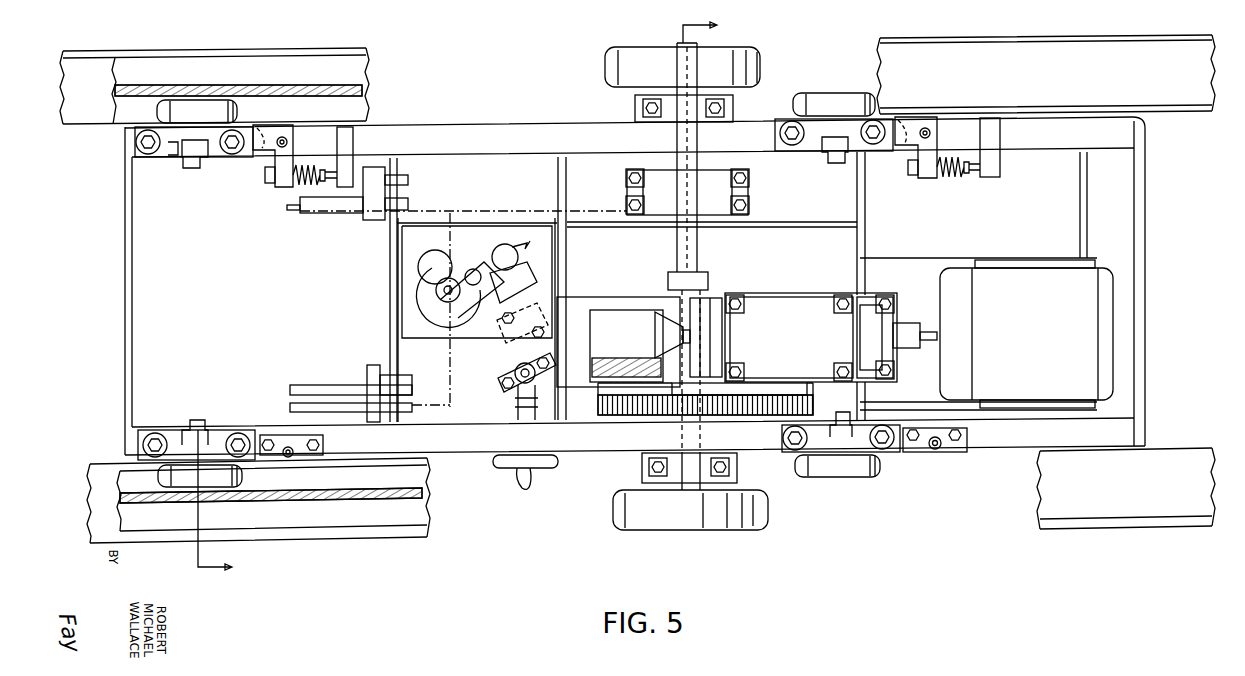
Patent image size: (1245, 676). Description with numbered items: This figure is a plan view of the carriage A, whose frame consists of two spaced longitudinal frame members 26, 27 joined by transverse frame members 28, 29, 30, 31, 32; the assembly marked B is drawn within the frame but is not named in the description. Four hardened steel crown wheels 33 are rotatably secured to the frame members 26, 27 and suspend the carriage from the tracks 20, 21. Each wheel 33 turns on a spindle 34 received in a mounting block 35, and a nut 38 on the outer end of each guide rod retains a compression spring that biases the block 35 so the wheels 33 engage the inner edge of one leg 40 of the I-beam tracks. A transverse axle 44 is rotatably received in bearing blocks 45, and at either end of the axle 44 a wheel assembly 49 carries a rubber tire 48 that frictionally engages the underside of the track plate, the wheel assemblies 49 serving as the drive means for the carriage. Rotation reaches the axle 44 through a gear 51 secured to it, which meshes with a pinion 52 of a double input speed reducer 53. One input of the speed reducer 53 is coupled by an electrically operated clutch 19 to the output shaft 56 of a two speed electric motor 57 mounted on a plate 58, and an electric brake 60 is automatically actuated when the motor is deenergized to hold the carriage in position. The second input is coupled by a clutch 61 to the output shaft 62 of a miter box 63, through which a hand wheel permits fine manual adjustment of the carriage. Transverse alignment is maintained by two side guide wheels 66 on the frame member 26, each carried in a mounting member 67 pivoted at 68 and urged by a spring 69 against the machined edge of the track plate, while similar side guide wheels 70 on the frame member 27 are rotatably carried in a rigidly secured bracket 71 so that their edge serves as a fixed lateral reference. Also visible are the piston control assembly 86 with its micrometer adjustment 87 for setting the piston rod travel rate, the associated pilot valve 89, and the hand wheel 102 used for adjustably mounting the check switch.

The electrically operated clutch 19 is at (907, 340).
The track 20 is at (327, 73).
The track 21 is at (362, 503).
The longitudinal frame member 26 is at (530, 133).
The longitudinal frame member 27 is at (487, 440).
The transverse frame member 28 is at (1138, 233).
The transverse frame member 29 is at (862, 235).
The transverse frame member 30 is at (560, 257).
The transverse frame member 31 is at (393, 192).
The transverse frame member 32 is at (125, 240).
The crown wheel 33 is at (208, 108).
The spindle 34 is at (198, 163).
The mounting block 35 is at (180, 135).
The nut 38 is at (147, 142).
The leg of I-beam 40 is at (350, 100).
The transverse axle 44 is at (695, 245).
The bearing block 45 is at (672, 113).
The rubber tire 48 is at (635, 72).
The wheel assembly 49 is at (643, 42).
The gear 51 is at (617, 410).
The pinion 52 is at (813, 390).
The speed reducer 53 is at (780, 307).
The output shaft 56 is at (933, 330).
The electric motor 57 is at (1028, 290).
The plate 58 is at (887, 267).
The electric brake 60 is at (718, 193).
The clutch 61 is at (710, 310).
The output shaft 62 is at (670, 333).
The miter box 63 is at (613, 318).
The side guide wheel 66 is at (267, 133).
The mounting member 67 is at (278, 165).
The pivot 68 is at (288, 142).
The spring 69 is at (303, 187).
The side guide wheel 70 is at (313, 460).
The bracket 71 is at (302, 435).
The piston control assembly 86 is at (472, 243).
The micrometer adjustment 87 is at (480, 285).
The pilot valve 89 is at (427, 258).
The hand wheel 102 is at (515, 462).
The carriage A is at (448, 598).
The tool assembly B is at (380, 298).